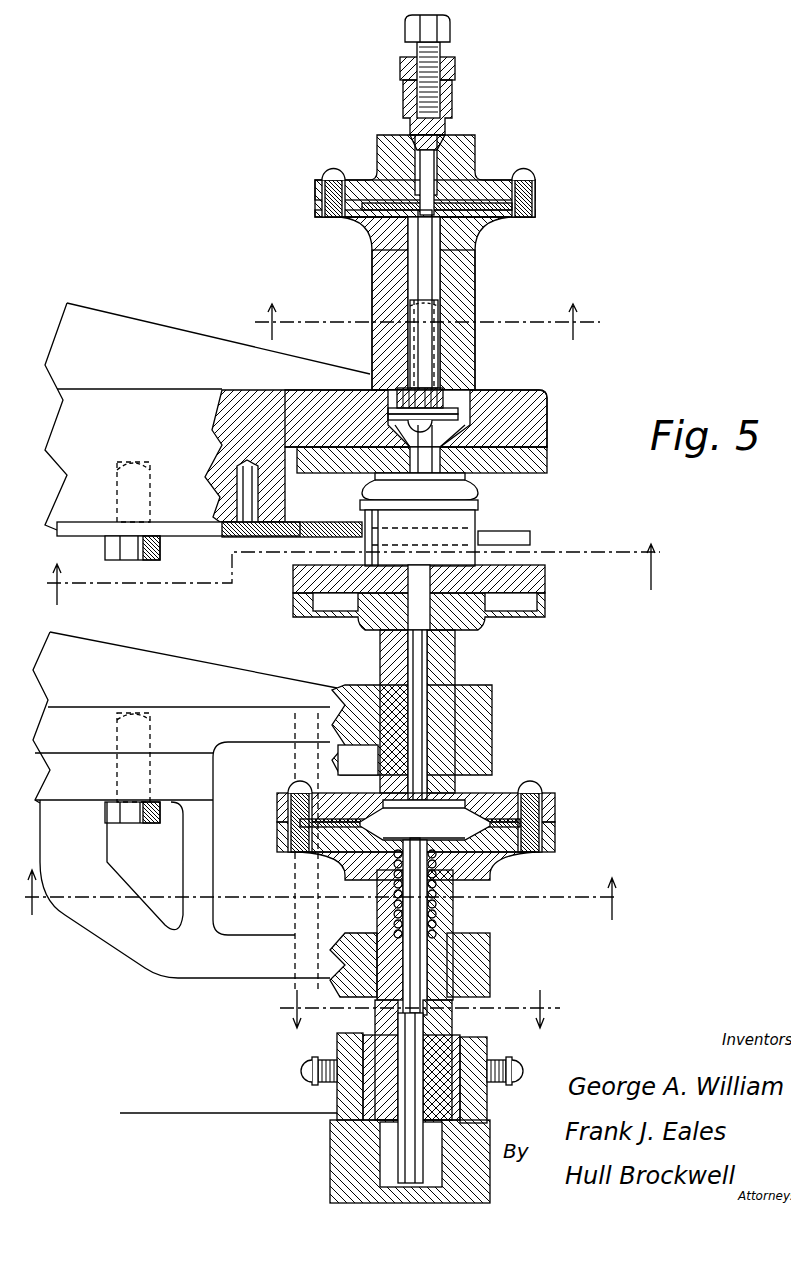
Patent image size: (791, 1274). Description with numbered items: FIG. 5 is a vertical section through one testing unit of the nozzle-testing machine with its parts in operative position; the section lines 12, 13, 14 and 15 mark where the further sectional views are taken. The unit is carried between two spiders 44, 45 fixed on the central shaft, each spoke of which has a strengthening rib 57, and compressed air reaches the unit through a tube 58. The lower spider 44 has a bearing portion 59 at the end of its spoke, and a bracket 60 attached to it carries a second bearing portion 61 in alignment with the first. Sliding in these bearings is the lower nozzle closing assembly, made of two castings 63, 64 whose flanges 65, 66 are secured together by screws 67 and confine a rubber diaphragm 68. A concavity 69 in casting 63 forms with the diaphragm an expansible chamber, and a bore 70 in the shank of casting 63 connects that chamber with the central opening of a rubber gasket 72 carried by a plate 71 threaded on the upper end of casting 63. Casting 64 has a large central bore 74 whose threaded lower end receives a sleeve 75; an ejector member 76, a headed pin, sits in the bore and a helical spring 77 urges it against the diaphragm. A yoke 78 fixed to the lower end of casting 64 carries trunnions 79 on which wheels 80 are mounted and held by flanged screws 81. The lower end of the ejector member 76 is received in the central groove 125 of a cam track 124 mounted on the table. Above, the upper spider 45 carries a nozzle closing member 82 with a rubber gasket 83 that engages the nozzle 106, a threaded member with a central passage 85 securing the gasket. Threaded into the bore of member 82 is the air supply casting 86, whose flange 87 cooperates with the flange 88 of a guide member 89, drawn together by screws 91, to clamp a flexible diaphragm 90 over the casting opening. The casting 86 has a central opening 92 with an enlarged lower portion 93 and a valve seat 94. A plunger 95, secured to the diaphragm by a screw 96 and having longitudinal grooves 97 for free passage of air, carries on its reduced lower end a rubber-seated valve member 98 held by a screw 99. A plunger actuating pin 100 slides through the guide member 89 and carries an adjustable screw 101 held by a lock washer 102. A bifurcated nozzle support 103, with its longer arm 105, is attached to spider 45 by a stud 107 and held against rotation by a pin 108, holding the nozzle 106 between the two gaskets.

The section line 12— 12 is at (425, 322).
The section line 13— 13 is at (346, 583).
The section line 14— 14 is at (316, 909).
The section line 15— 15 is at (415, 1009).
The spider 44 is at (124, 768).
The spider 45 is at (333, 456).
The strengthening rib 57 is at (201, 553).
The tube 58 is at (440, 302).
The bearing portion 59 is at (492, 705).
The bracket 60 is at (185, 851).
The bearing portion 61 is at (480, 950).
The casting 63 is at (452, 651).
The casting 64 is at (452, 967).
The flange 65 is at (556, 807).
The flange 66 is at (556, 851).
The screw 67 is at (533, 792).
The rubber diaphragm 68 is at (428, 835).
The concavity 69 is at (378, 776).
The bore 70 is at (393, 656).
The plate 71 is at (546, 612).
The rubber gasket 72 is at (546, 582).
The central bore 74 is at (438, 886).
The sleeve 75 is at (453, 1006).
The ejector member 76 is at (405, 1157).
The helical spring 77 is at (422, 921).
The yoke 78 is at (468, 1040).
The trunnion 79 is at (326, 1086).
The wheel 80 is at (340, 1045).
The flanged screw 81 is at (320, 1075).
The nozzle closing member 82 is at (548, 418).
The rubber gasket 83 is at (548, 468).
The central passage 85 is at (418, 477).
The casting 86 is at (373, 296).
The flange 87 is at (540, 213).
The flange 88 is at (538, 192).
The guide member 89 is at (465, 142).
The flexible diaphragm 90 is at (490, 200).
The screw 91 is at (526, 172).
The central opening 92 is at (405, 342).
The enlarged lower portion 93 is at (470, 396).
The valve seat 94 is at (458, 392).
The plunger 95 is at (476, 262).
The screw 96 is at (418, 197).
The longitudinal groove 97 is at (420, 262).
The valve member 98 is at (397, 393).
The screw 99 is at (440, 352).
The plunger actuating pin 100 is at (403, 104).
The adjustable screw 101 is at (418, 30).
The lock washer 102 is at (456, 68).
The nozzle support 103 is at (195, 537).
The longer arm 105 is at (531, 540).
The nozzle 106 is at (479, 531).
The stud 107 is at (135, 560).
The pin 108 is at (248, 536).
The cam track 124 is at (332, 1186).
The central groove 125 is at (385, 1140).